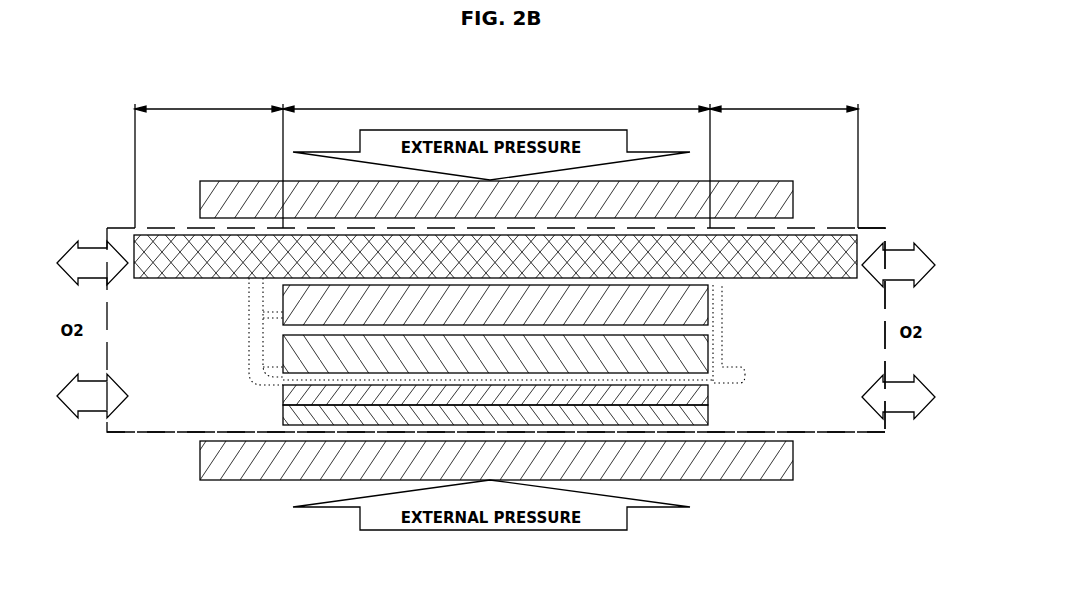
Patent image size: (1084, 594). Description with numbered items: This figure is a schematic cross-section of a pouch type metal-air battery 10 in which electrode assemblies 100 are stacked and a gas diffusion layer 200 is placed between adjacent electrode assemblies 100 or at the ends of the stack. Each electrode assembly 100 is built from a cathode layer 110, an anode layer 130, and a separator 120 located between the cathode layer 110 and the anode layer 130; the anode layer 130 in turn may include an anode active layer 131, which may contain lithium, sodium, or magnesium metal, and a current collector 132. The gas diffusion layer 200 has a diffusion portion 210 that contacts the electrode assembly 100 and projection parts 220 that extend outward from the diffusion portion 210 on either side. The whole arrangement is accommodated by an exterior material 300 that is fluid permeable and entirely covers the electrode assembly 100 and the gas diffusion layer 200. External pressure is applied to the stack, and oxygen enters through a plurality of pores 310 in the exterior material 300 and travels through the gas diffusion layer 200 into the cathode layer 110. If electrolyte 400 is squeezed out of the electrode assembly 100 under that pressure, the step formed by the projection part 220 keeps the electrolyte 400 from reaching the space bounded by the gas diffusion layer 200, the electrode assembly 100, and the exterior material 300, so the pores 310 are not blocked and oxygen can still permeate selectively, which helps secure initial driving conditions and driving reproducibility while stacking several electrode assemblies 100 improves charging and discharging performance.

The pouch type metal-air battery 10 is at (221, 72).
The electrode assembly 100 is at (580, 355).
The cathode layer 110 is at (710, 305).
The separator 120 is at (710, 350).
The anode layer 130 is at (551, 405).
The anode active layer 131 is at (710, 393).
The current collector 132 is at (710, 413).
The gas diffusion layer 200 is at (850, 247).
The diffusion portion 210 is at (496, 159).
The projection part 220 is at (496, 159).
The exterior material 300 is at (827, 433).
The pores 310 is at (852, 433).
The electrolyte 400 is at (268, 378).